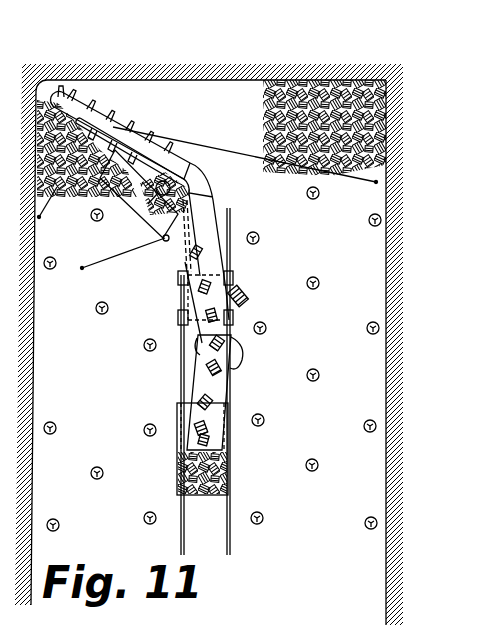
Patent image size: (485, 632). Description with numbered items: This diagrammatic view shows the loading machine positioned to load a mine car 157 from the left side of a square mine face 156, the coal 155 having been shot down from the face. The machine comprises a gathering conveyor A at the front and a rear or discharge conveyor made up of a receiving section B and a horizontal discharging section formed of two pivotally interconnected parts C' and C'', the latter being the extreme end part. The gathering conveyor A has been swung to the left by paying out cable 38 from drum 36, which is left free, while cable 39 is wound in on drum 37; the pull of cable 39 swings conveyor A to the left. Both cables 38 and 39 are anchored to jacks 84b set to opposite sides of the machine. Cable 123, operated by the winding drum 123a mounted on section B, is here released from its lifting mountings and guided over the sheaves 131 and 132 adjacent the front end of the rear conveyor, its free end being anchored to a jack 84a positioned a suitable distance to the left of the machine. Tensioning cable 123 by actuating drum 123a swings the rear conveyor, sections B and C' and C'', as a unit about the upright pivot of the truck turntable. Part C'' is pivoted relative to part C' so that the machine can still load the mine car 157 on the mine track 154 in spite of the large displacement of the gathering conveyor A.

The gathering conveyor A is at (65, 103).
The receiving section B is at (228, 236).
The first part of discharging section C' is at (167, 309).
The extreme end part of discharging section C'' is at (185, 392).
The drum 36 is at (165, 199).
The drum 37 is at (194, 184).
The cable 38 is at (196, 141).
The cable 39 is at (50, 193).
The jack 84a is at (82, 268).
The jacks 84b is at (39, 217).
The cable 123 is at (223, 250).
The winding drum 123a is at (246, 295).
The guide sheave 131 is at (199, 240).
The guide sheave 132 is at (165, 241).
The mine track 154 is at (229, 506).
The coal 155 is at (341, 79).
The mine face 156 is at (245, 71).
The mine car 157 is at (226, 445).